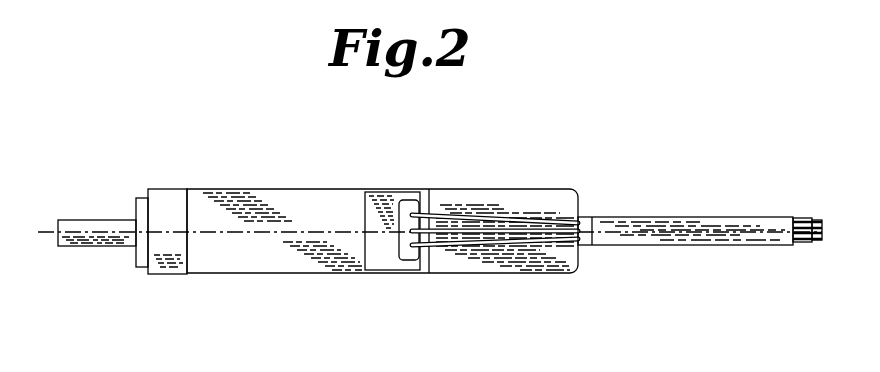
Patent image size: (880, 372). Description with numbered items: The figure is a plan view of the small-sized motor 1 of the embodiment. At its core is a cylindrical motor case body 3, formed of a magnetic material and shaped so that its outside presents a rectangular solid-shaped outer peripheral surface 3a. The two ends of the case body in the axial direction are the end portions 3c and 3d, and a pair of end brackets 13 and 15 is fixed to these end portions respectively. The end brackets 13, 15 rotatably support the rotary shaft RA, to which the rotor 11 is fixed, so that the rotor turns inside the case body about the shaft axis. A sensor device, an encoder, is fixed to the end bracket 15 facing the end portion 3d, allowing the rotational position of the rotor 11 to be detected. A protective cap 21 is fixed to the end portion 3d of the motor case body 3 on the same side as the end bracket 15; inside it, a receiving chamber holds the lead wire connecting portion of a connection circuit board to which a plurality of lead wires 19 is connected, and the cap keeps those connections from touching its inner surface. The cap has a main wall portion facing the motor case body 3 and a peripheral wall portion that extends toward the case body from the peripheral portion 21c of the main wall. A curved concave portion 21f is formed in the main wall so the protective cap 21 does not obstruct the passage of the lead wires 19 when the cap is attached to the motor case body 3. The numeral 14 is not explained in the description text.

The rotary shaft RA is at (51, 230).
The small-sized motor 1 is at (377, 221).
The motor case body 3 is at (240, 189).
The outer peripheral surface 3a is at (282, 205).
The end portion 3c is at (187, 275).
The end portion 3d is at (399, 271).
The rotor 11 is at (108, 248).
The end bracket 13 is at (163, 202).
The filler resin 14 is at (485, 259).
The end bracket 15 is at (417, 189).
The lead wires 19 is at (515, 229).
The protective cap 21 is at (388, 216).
The peripheral portion 21c is at (361, 200).
The curved concave portion 21f is at (403, 250).